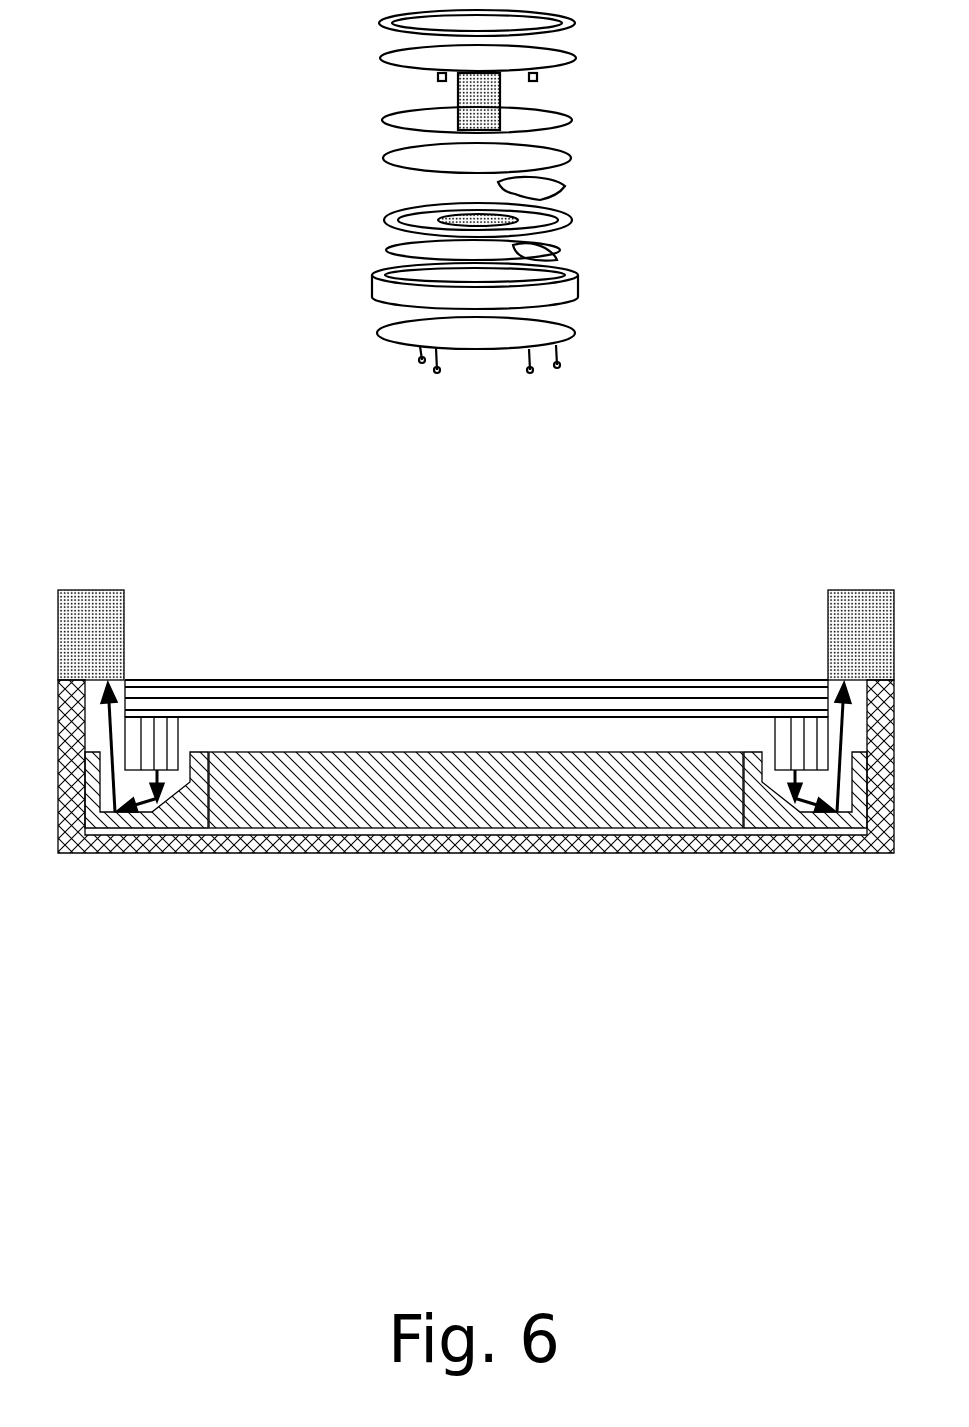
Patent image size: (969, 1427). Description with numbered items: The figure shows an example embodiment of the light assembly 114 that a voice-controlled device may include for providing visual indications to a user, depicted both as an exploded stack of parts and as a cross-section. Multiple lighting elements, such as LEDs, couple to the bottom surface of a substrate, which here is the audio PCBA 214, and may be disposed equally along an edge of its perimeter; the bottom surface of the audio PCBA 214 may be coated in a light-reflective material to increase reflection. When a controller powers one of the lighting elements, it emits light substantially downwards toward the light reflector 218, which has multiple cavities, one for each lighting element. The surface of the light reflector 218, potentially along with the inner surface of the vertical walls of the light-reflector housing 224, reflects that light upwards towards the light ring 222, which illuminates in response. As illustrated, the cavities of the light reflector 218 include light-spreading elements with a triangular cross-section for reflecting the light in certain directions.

The light assembly 114 is at (353, 372).
The audio PCBA 214 is at (570, 680).
The light reflector 218 is at (383, 736).
The light ring 222 is at (126, 590).
The light-reflector housing 224 is at (388, 855).